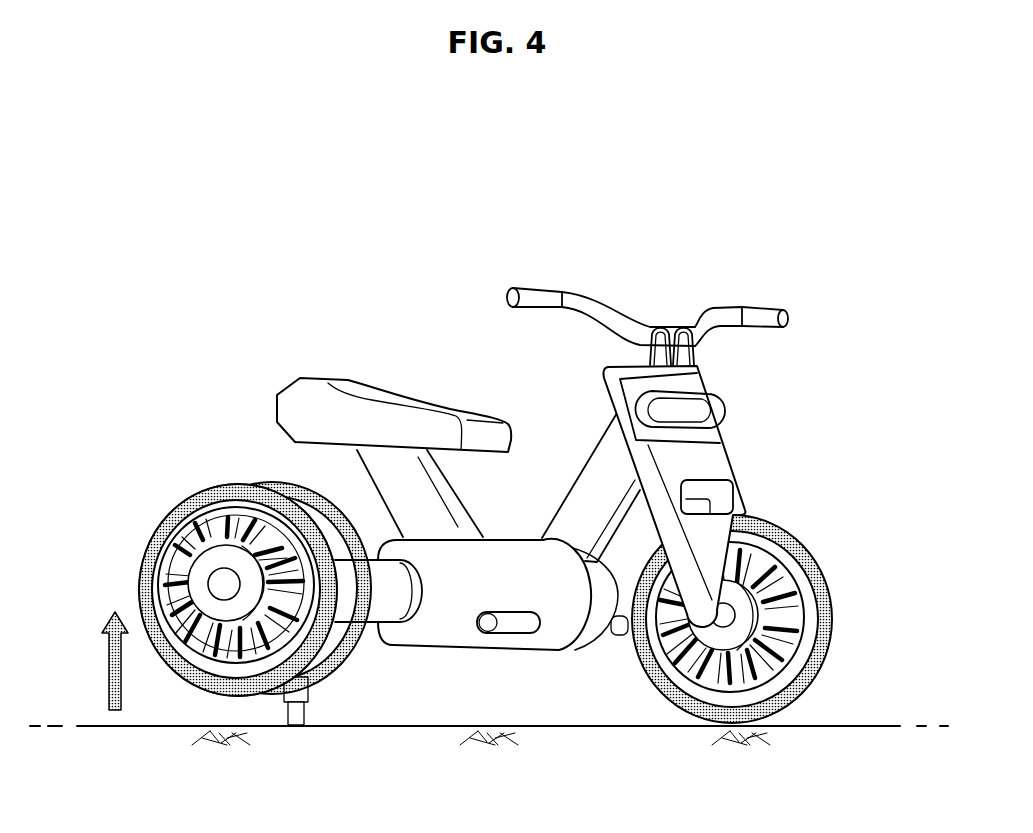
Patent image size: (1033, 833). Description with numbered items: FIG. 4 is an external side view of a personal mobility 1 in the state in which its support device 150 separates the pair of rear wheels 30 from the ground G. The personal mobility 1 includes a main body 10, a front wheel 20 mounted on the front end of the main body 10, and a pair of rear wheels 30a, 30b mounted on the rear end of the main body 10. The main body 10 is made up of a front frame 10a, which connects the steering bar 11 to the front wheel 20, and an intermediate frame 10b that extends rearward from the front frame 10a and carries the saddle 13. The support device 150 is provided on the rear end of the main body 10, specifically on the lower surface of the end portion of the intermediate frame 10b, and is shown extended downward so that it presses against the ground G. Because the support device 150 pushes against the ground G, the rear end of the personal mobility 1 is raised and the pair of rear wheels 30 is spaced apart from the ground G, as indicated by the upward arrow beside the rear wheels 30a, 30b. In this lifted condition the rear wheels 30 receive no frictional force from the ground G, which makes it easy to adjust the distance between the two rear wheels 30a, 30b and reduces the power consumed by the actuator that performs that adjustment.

The personal mobility 1 is at (317, 213).
The main body 10 is at (634, 544).
The front frame 10a is at (723, 467).
The intermediate frame 10b is at (463, 645).
The steering bar 11 is at (733, 312).
The saddle 13 is at (307, 390).
The front wheel 20 is at (817, 582).
The pair of rear wheels 30 is at (213, 561).
The rear wheel 30a is at (287, 487).
The rear wheel 30b is at (200, 498).
The support device 150 is at (307, 693).
The ground G is at (860, 724).